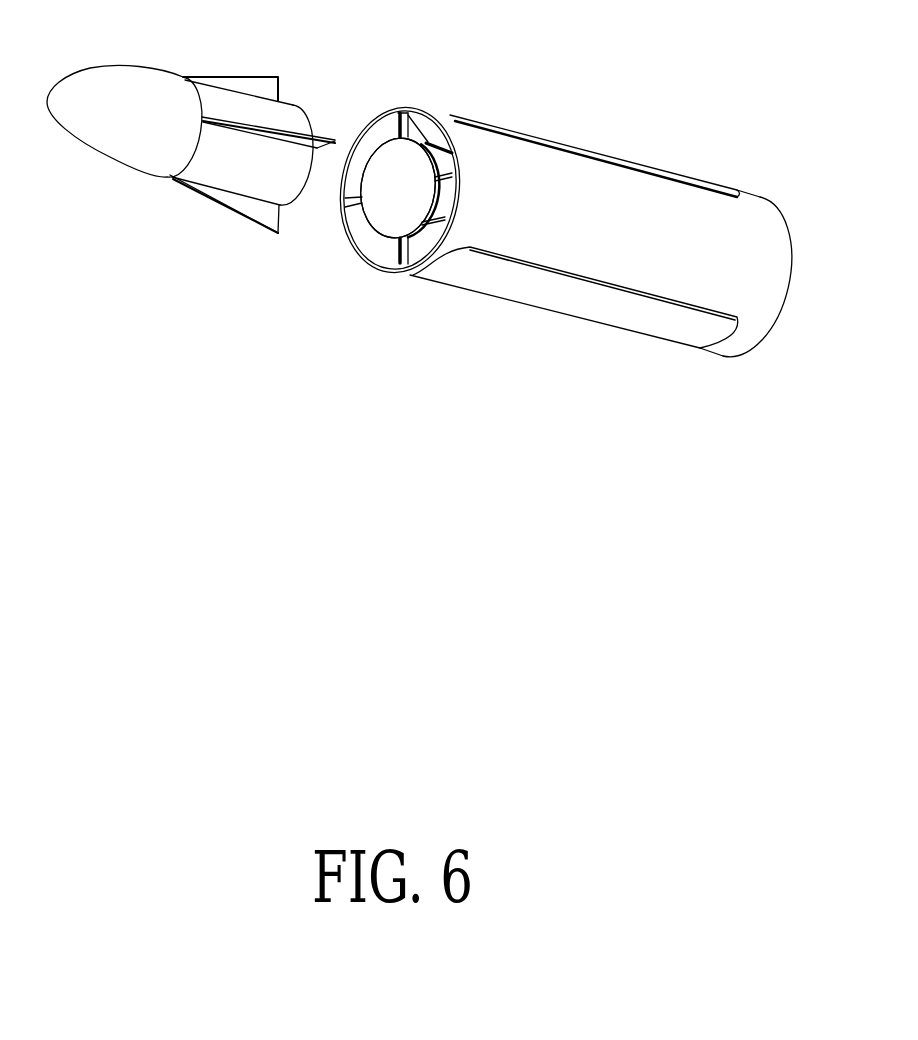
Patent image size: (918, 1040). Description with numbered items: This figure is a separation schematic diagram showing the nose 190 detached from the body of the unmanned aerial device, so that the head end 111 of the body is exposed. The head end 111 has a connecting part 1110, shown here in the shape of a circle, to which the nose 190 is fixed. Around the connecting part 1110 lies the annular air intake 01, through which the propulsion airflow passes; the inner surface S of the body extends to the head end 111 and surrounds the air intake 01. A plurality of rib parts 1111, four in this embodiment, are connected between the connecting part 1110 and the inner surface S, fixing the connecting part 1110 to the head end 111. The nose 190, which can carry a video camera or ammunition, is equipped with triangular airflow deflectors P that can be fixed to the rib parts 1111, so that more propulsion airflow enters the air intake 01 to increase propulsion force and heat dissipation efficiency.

The nose 190 is at (142, 85).
The airflow deflector P is at (248, 85).
The head end 111 is at (410, 108).
The rib part 1111 is at (451, 153).
The connecting part 1110 is at (385, 215).
The air intake 01 is at (384, 141).
The inner surface S is at (410, 252).